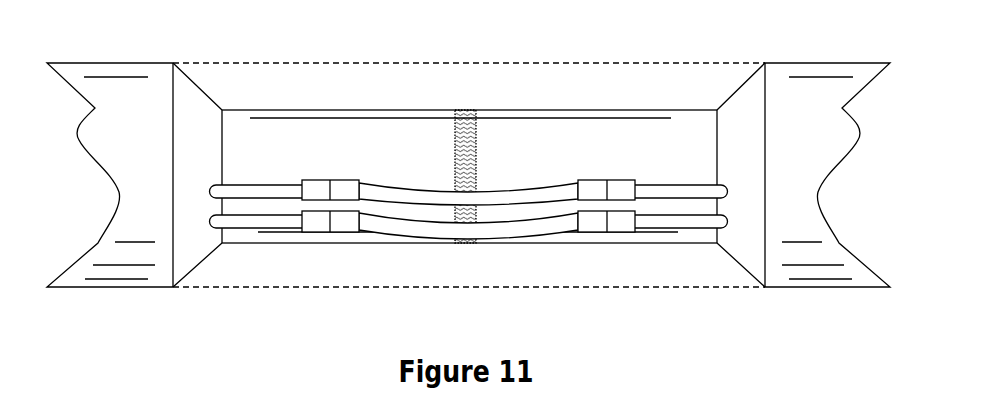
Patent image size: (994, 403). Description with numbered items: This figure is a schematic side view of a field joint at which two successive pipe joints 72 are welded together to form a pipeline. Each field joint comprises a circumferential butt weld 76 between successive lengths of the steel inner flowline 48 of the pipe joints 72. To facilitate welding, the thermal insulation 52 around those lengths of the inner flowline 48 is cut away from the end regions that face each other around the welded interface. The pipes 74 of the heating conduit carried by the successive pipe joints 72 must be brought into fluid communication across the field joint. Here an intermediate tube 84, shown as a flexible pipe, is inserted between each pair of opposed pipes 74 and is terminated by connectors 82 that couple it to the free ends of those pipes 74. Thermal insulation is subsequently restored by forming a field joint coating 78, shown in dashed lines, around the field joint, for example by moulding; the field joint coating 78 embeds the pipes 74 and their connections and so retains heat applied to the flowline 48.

The pipe joint 72 is at (82, 50).
The field joint coating 78 is at (287, 289).
The thermal insulation 52 is at (198, 112).
The inner flowline 48 is at (373, 142).
The circumferential butt weld 76 is at (468, 120).
The intermediate tube 84 is at (495, 229).
The pipe 74 is at (280, 188).
The connector 82 is at (346, 187).